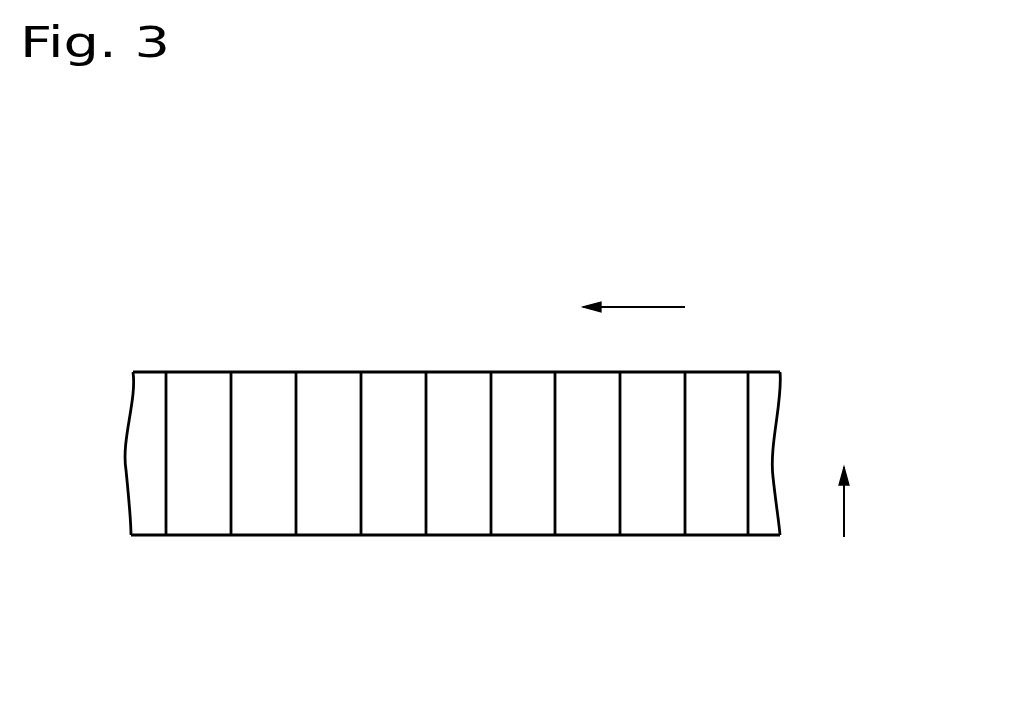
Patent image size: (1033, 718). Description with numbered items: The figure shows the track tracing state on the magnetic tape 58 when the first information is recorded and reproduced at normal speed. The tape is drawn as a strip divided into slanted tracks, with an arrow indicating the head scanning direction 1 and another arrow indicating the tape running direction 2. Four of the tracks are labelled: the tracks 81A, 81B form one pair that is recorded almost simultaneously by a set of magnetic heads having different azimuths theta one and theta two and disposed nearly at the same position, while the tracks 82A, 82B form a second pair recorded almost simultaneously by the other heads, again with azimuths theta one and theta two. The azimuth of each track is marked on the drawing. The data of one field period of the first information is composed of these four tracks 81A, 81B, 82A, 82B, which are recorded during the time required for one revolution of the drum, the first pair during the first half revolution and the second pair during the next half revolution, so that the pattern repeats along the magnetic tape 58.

The track 81A is at (193, 527).
The track 81B is at (263, 527).
The track 82A is at (323, 527).
The track 82B is at (393, 527).
The magnetic tape 58 is at (648, 528).
The head scanning direction 1 is at (856, 505).
The tape running direction 2 is at (650, 307).